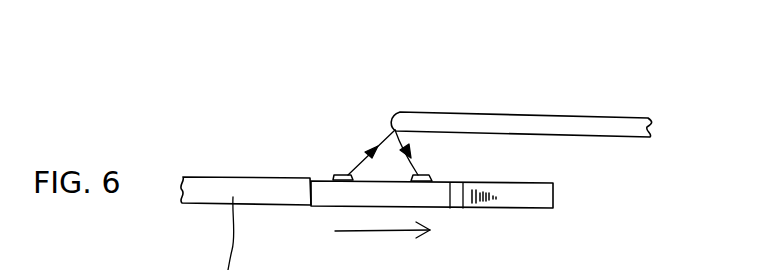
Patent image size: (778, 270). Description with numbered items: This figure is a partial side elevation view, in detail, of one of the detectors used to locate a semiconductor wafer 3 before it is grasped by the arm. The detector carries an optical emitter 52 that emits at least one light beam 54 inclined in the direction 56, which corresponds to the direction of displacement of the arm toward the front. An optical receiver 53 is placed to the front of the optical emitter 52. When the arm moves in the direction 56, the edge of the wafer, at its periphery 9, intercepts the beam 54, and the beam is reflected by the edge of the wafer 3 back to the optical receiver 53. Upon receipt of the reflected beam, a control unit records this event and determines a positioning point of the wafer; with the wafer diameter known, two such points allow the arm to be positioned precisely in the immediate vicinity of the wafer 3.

The semiconductor wafer 3 is at (477, 115).
The periphery of wafer 9 is at (390, 123).
The optical emitter 52 is at (333, 173).
The optical receiver 53 is at (432, 175).
The light beam 54 is at (354, 173).
The direction of displacement 56 is at (352, 236).